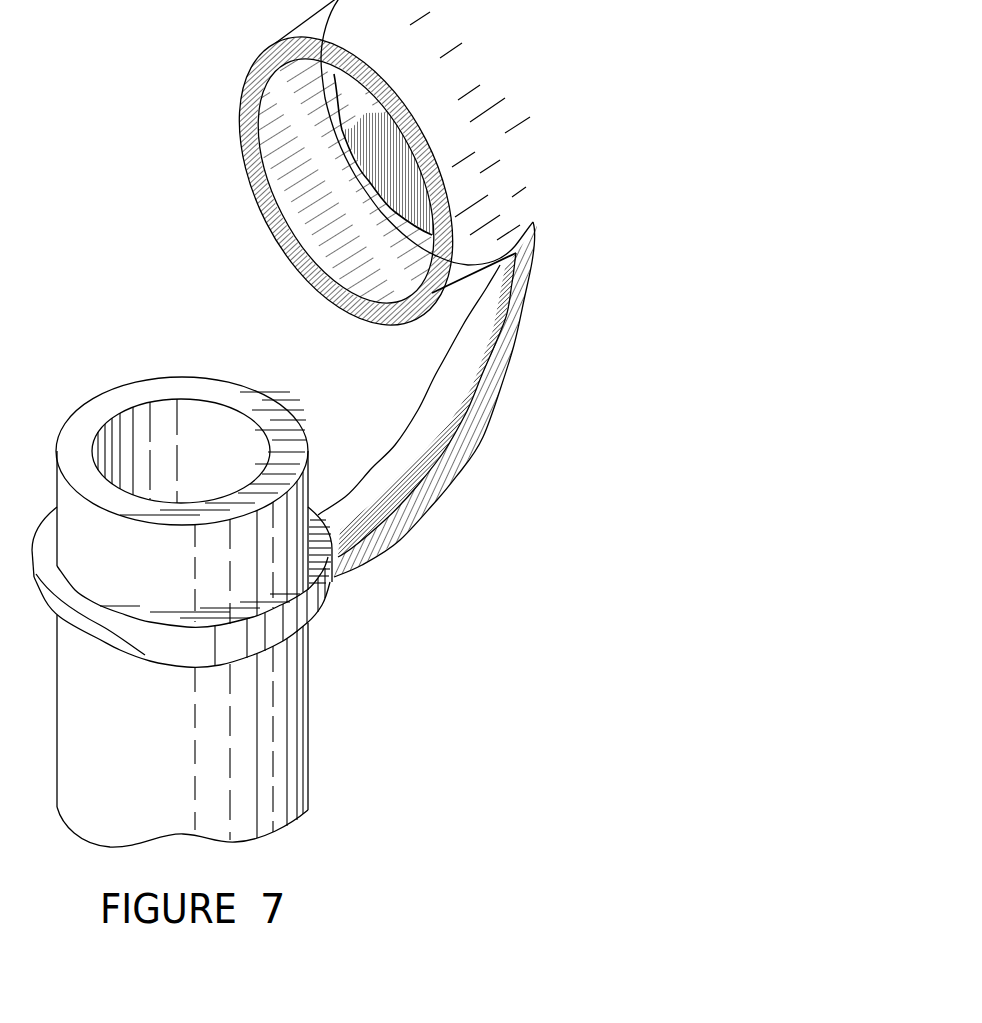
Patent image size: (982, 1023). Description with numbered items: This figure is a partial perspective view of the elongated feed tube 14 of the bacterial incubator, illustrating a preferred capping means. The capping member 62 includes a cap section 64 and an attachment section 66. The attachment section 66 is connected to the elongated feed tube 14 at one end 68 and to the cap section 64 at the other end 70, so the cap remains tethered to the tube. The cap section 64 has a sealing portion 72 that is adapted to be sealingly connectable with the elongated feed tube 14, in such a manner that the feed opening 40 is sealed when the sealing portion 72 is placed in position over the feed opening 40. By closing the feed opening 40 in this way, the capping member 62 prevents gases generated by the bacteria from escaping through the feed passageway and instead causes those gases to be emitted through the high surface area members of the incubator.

The elongated feed tube 14 is at (275, 715).
The feed opening 40 is at (230, 469).
The capping member 62 is at (451, 333).
The cap section 64 is at (473, 115).
The attachment section 66 is at (443, 450).
The one end 68 is at (357, 555).
The other end 70 is at (535, 243).
The sealing portion 72 is at (292, 137).